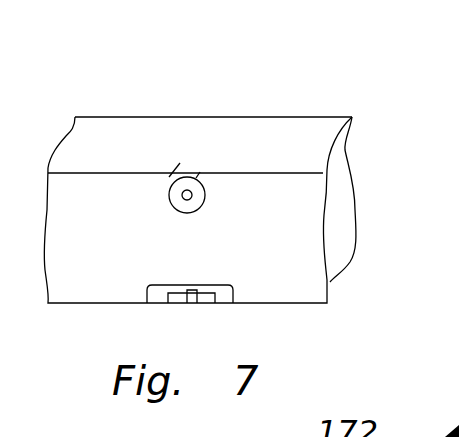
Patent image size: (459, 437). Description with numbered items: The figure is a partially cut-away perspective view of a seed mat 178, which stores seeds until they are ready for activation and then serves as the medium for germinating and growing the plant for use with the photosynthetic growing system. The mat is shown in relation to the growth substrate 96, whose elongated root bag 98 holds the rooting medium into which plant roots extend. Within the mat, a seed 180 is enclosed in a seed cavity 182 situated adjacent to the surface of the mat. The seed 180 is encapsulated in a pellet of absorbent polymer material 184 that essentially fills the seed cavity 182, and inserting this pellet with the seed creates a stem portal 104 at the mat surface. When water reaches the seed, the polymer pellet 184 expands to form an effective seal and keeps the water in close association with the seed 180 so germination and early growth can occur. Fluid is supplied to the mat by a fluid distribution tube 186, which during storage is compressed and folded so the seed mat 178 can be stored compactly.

The seed mat 178 is at (300, 92).
The root bag 98 is at (93, 130).
The growth substrate 96 is at (340, 168).
The stem portal 104 is at (200, 172).
The seed cavity 182 is at (206, 200).
The seed 180 is at (190, 200).
The absorbent polymer pellet 184 is at (175, 211).
The fluid distribution tube 186 is at (223, 297).